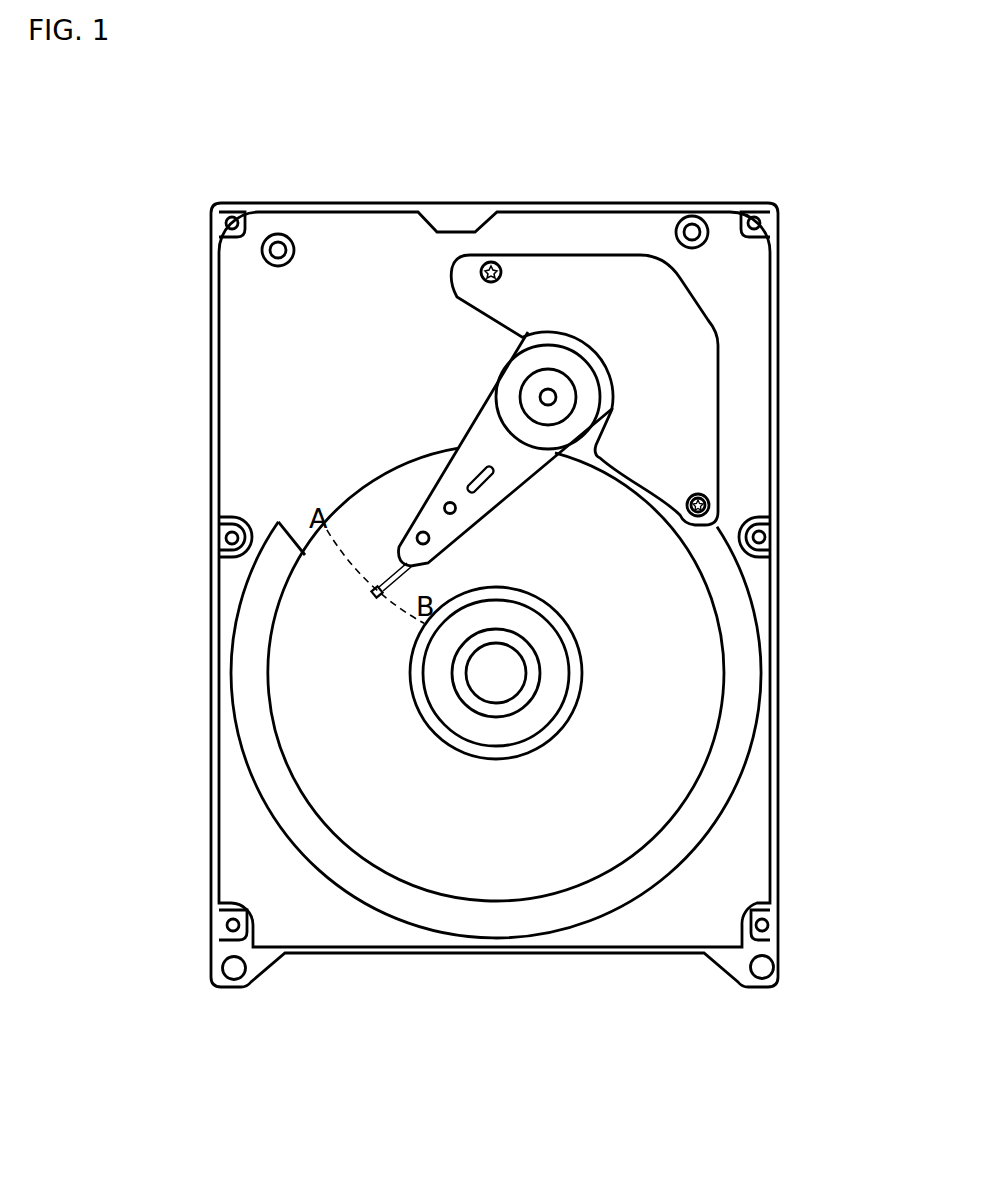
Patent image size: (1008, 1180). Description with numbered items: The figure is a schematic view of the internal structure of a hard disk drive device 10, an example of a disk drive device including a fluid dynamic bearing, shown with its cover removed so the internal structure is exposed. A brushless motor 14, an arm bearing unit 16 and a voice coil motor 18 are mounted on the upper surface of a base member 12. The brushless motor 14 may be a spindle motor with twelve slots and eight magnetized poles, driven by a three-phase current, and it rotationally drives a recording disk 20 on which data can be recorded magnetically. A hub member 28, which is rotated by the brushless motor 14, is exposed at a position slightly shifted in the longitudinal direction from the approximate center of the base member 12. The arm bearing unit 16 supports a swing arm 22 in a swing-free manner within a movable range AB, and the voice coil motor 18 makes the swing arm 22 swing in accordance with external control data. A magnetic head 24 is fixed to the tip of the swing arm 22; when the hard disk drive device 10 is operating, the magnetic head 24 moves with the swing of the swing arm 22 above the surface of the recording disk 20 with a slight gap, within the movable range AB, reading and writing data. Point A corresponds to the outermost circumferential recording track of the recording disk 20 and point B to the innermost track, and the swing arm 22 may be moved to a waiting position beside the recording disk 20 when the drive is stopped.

The hard disk drive device 10 is at (611, 159).
The base member 12 is at (778, 303).
The brushless motor 14 is at (567, 644).
The arm bearing unit 16 is at (600, 402).
The voice coil motor 18 is at (687, 290).
The recording disk 20 is at (690, 710).
The swing arm 22 is at (466, 436).
The magnetic head 24 is at (375, 593).
The hub member 28 is at (542, 710).